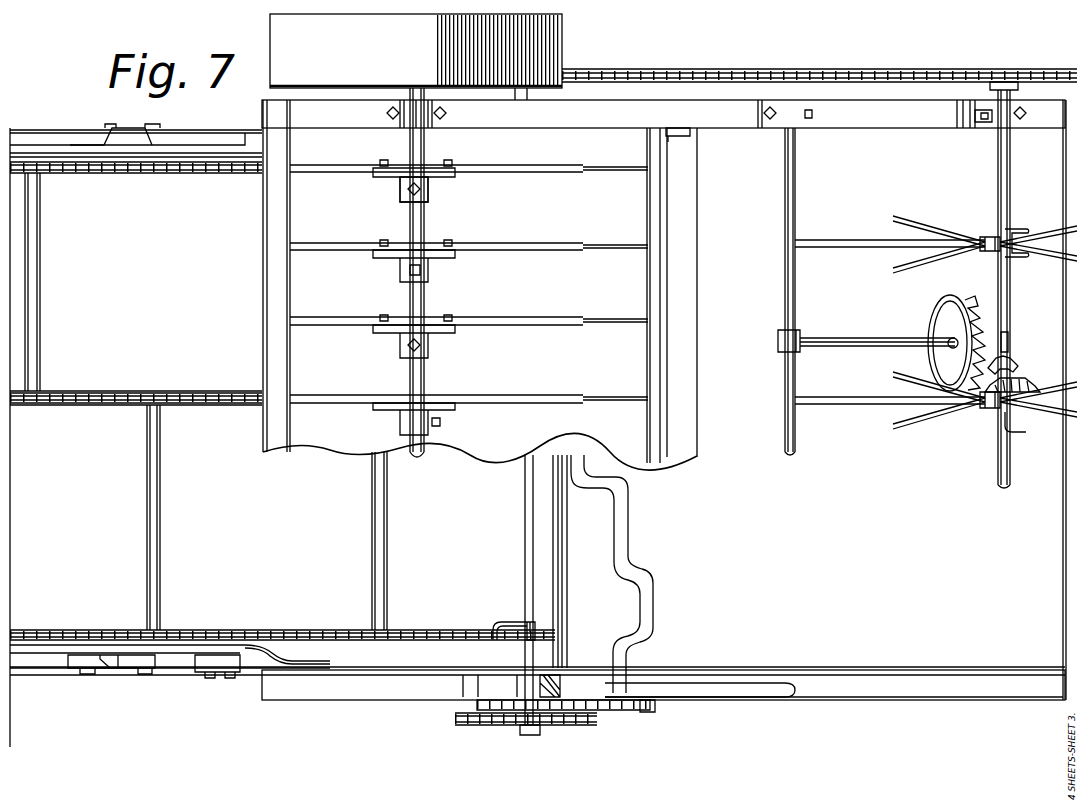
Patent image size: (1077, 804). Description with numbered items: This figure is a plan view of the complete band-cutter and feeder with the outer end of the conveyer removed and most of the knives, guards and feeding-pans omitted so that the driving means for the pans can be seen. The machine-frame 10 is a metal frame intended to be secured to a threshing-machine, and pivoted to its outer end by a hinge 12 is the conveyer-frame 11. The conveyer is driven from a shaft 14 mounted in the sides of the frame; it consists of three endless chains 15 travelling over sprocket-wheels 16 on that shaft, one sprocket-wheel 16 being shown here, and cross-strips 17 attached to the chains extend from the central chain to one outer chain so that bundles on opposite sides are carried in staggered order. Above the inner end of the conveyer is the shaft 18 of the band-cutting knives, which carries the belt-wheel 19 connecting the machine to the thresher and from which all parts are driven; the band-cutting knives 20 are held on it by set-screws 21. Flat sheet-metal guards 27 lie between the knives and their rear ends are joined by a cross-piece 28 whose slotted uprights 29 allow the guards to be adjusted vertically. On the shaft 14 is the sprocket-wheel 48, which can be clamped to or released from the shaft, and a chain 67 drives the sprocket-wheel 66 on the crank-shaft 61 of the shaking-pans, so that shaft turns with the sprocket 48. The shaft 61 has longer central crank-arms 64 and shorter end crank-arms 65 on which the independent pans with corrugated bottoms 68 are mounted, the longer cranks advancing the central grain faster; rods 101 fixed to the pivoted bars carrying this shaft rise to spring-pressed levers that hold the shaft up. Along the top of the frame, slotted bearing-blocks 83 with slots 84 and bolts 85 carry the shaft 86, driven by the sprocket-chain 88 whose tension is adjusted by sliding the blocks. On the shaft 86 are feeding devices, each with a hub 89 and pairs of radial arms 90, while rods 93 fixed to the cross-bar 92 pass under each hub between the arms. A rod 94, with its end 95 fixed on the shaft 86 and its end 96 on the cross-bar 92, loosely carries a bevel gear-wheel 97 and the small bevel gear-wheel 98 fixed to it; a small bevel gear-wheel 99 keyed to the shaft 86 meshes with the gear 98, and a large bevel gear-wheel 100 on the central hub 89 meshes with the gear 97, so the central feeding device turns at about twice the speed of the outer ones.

The frame of the machine 10 is at (537, 400).
The conveyer-frame 11 is at (187, 662).
The hinge 12 is at (228, 675).
The shaft 14 is at (530, 735).
The endless chains 15 is at (175, 174).
The sprocket-wheels 16 is at (522, 628).
The cross-strips 17 is at (42, 332).
The shaft of the band-cutting knives 18 is at (425, 378).
The belt-wheel 19 is at (416, 57).
The band-cutting knives 20 is at (530, 172).
The set-screws 21 is at (430, 190).
The flat sheet-metal guard 27 is at (469, 344).
The cross-piece 28 is at (647, 289).
The slotted uprights 29 is at (680, 130).
The sprocket-wheel 48 is at (492, 725).
The shaft of the shaking-pans 61 is at (629, 552).
The crank-arms 64 is at (584, 468).
The crank-arms 65 is at (642, 608).
The sprocket-wheel 66 is at (650, 710).
The sprocket-chains 67 is at (642, 712).
The corrugated bottom 68 is at (773, 697).
The bearing-blocks 83 is at (978, 123).
The slots 84 is at (955, 117).
The bolts 85 is at (985, 124).
The shaft 86 is at (998, 464).
The sprocket-chain 88 is at (675, 70).
The hub 89 is at (990, 237).
The arms 90 is at (942, 224).
The cross-bar 92 is at (784, 215).
The rods 93 is at (855, 246).
The rod 94 is at (855, 338).
The end of rod 95 is at (1010, 342).
The end of rod 96 is at (780, 345).
The bevel gear-wheel 97 is at (942, 314).
The small bevel gear-wheel 98 is at (1000, 322).
The small bevel gear-wheel 99 is at (1008, 364).
The large bevel gear-wheel 100 is at (1028, 381).
The rods 101 is at (730, 699).